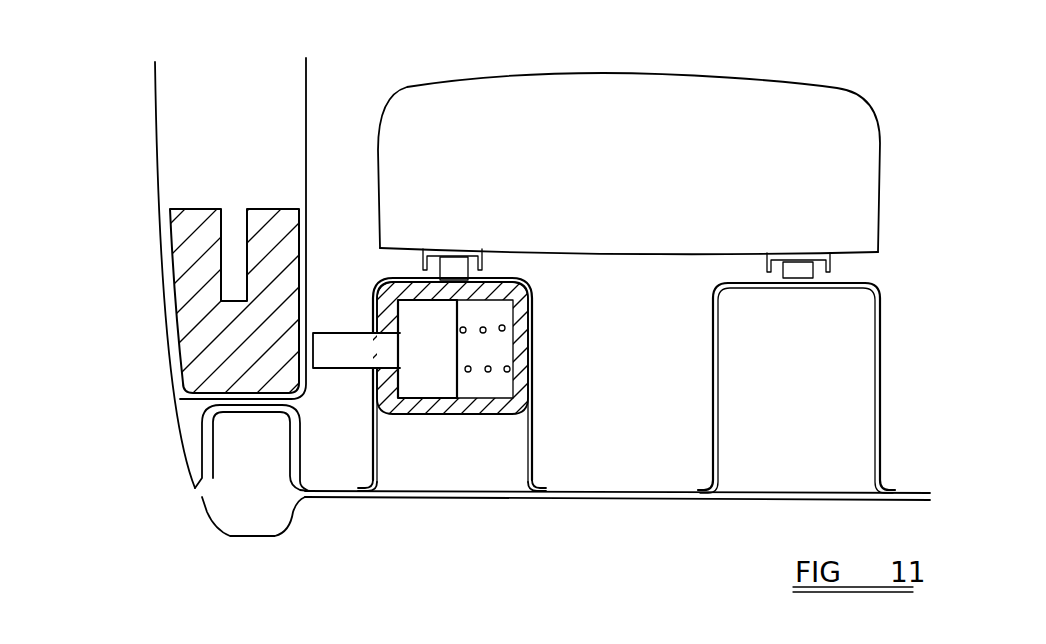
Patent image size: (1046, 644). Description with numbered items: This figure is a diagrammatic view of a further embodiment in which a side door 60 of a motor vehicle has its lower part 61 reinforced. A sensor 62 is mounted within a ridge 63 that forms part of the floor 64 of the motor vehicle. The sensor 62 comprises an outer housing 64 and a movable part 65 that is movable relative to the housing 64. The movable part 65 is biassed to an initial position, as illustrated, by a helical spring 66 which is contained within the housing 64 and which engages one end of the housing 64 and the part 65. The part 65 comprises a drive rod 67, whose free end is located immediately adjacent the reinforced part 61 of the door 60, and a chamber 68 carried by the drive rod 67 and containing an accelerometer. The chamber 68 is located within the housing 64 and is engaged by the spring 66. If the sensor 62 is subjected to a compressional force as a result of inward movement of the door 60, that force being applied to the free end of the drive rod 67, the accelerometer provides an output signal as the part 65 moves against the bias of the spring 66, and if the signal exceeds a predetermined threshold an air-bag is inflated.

The side door 60 is at (157, 175).
The lower part of the door 61 is at (215, 315).
The sensor 62 is at (537, 285).
The ridge 63 is at (530, 452).
The floor / outer housing 64 is at (523, 348).
The movable part 65 is at (355, 312).
The helical spring 66 is at (503, 327).
The drive rod 67 is at (327, 348).
The chamber 68 is at (432, 373).